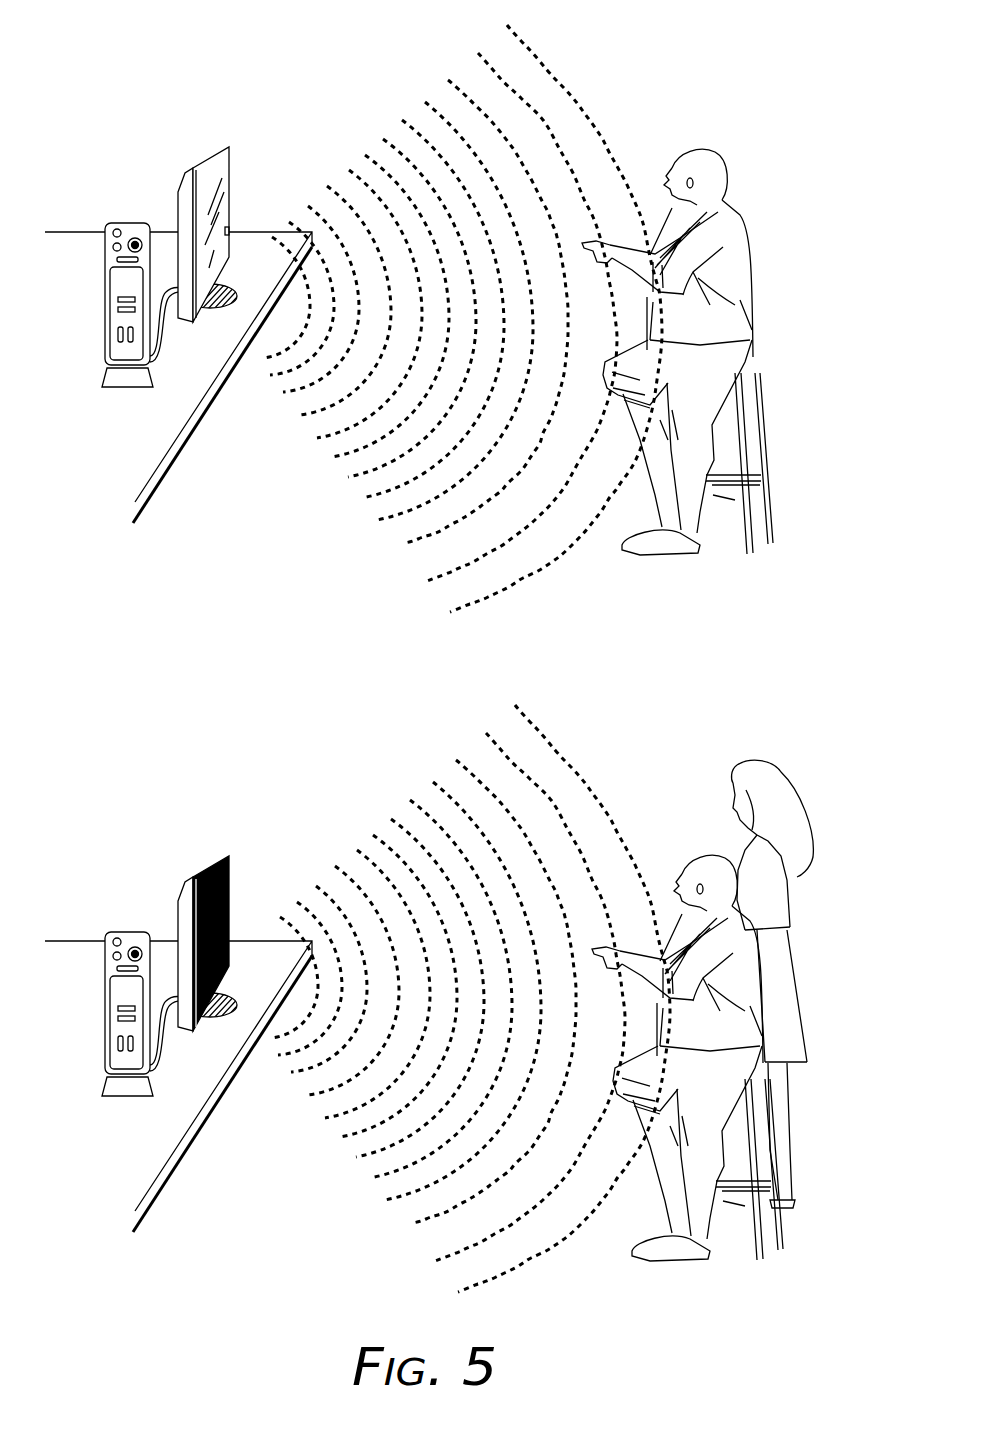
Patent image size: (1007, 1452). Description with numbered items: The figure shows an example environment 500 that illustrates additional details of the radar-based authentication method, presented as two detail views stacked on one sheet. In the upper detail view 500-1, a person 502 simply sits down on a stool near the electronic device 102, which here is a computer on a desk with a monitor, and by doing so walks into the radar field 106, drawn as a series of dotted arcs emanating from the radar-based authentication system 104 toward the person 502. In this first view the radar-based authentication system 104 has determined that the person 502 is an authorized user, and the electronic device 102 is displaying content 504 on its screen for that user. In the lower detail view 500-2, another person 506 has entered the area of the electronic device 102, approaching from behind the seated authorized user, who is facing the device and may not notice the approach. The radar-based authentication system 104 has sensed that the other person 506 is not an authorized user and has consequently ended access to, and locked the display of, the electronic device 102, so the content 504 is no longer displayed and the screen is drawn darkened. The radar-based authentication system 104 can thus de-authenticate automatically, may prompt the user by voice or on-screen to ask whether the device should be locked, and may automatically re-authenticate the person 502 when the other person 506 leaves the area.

The example environment 500 is at (855, 35).
The detail view 500-1 is at (293, 608).
The detail view 500-2 is at (298, 1288).
The electronic device 102 is at (96, 189).
The radar-based authentication system 104 is at (214, 147).
The content 504 is at (231, 219).
The radar field 106 is at (421, 91).
The person 502 is at (689, 137).
The other person 506 is at (754, 754).